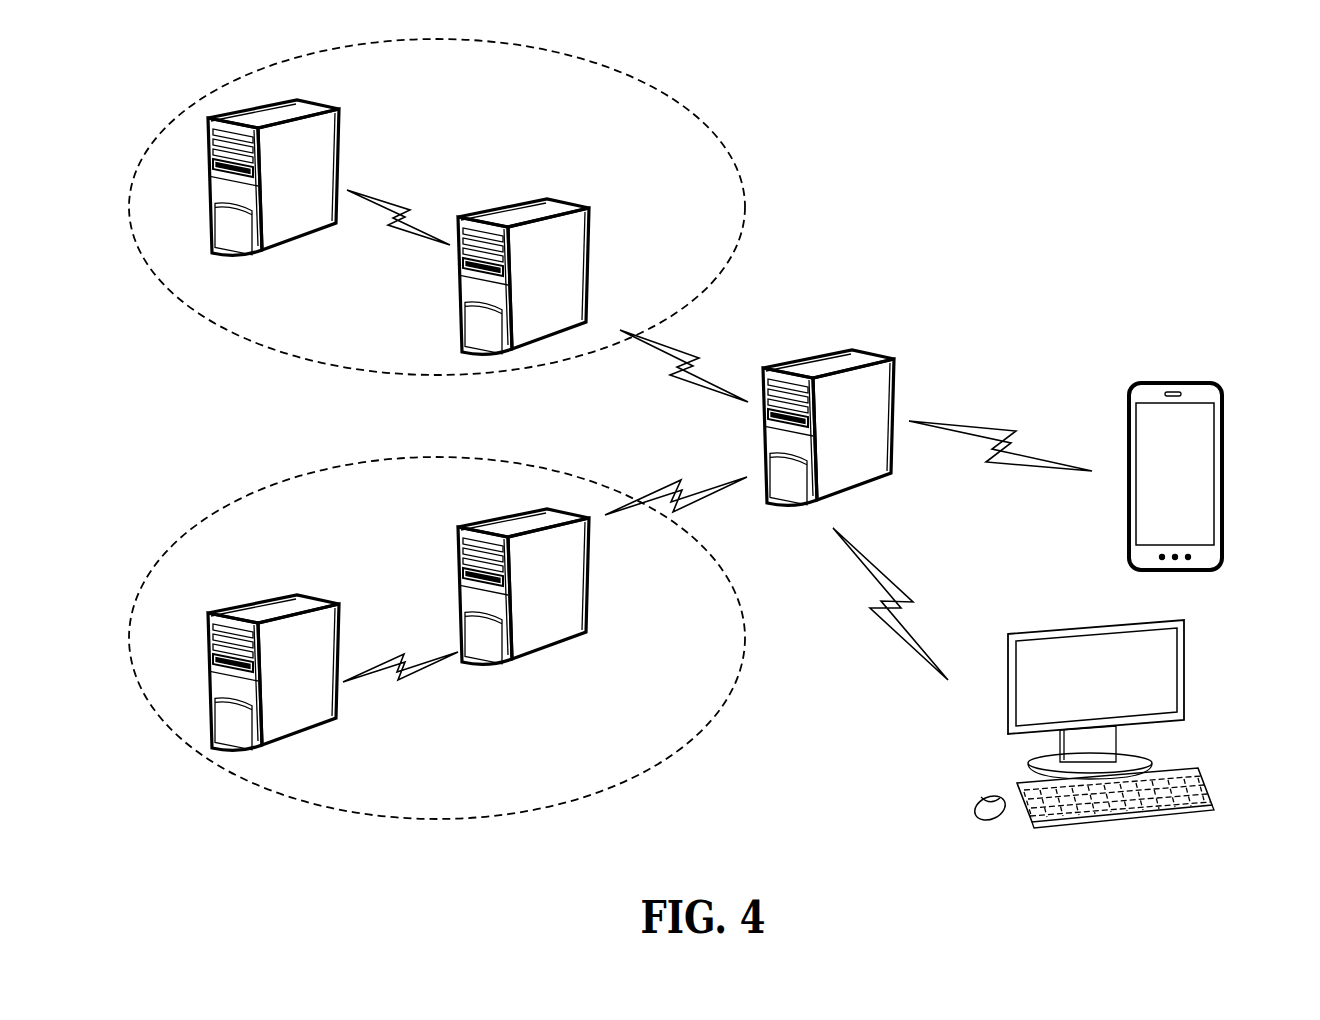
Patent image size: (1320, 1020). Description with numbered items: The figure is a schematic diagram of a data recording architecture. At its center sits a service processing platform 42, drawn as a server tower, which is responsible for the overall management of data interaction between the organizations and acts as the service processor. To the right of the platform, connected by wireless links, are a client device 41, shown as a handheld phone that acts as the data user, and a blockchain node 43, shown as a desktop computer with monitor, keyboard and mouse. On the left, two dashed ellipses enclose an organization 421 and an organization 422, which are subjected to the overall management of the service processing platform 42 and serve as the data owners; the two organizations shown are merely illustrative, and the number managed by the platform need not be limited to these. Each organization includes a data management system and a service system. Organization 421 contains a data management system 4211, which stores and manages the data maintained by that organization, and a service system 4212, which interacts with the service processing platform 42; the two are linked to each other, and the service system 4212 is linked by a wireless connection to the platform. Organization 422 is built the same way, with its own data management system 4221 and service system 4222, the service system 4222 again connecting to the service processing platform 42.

The organization 421 is at (535, 45).
The data management system 4211 is at (330, 142).
The service system 4212 is at (582, 238).
The organization 422 is at (535, 470).
The data management system 4221 is at (330, 637).
The service system 4222 is at (582, 570).
The service processing platform 42 is at (885, 392).
The client device 41 is at (1210, 464).
The blockchain node 43 is at (1020, 684).